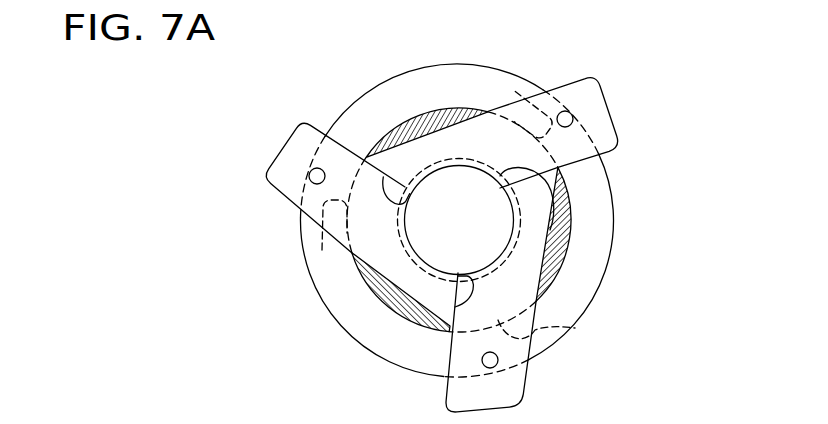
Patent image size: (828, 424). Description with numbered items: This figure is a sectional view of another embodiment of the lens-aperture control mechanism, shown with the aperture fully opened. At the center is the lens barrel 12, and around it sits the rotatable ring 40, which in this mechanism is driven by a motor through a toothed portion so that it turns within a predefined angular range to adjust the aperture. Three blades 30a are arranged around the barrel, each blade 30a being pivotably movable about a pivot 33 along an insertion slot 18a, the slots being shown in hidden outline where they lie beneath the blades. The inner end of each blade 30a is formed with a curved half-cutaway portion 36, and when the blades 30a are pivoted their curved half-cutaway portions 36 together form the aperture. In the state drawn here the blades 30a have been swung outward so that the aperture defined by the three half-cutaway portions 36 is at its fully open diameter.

The lens barrel 12 is at (389, 146).
The insertion slot 18a is at (312, 262).
The blade 30a is at (284, 163).
The pivot 33 is at (312, 168).
The curved half-cutaway portion 36 is at (426, 164).
The rotatable ring 40 is at (598, 198).